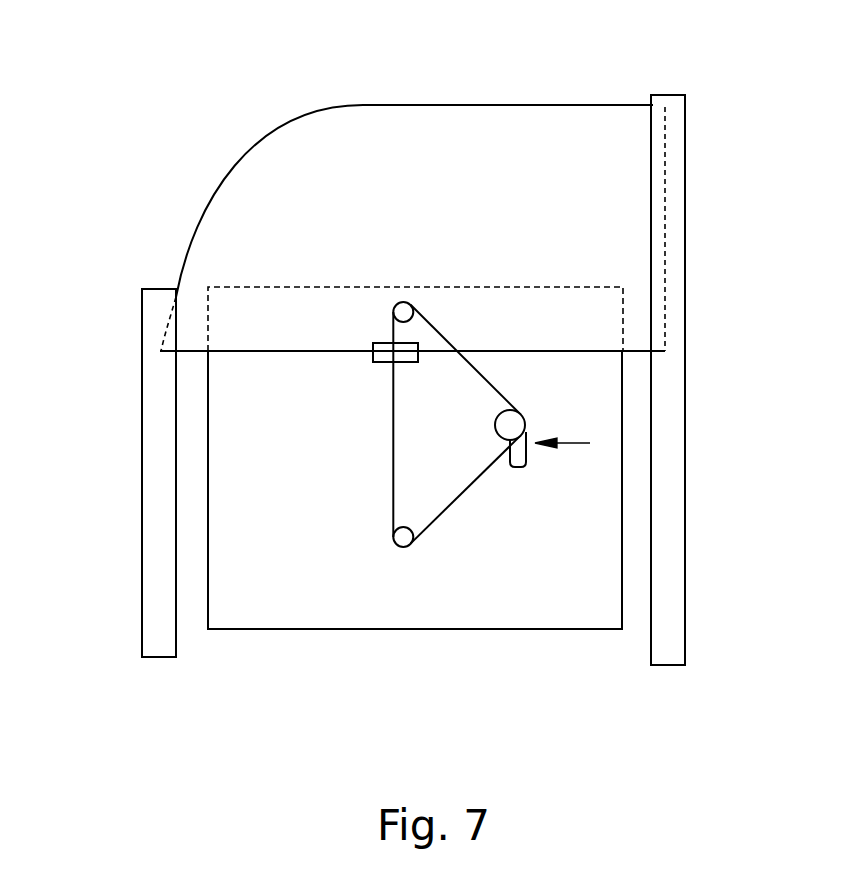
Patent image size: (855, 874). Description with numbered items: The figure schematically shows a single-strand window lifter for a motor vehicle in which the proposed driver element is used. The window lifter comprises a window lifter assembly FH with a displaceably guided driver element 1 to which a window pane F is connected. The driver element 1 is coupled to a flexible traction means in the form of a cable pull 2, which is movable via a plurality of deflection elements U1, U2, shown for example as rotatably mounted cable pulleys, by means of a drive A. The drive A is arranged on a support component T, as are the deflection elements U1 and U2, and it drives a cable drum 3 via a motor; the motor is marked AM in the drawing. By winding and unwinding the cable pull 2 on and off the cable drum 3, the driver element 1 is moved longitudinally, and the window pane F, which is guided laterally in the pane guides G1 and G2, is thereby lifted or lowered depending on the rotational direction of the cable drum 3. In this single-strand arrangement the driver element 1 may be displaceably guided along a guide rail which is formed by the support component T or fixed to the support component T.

The pane guide G1 is at (148, 513).
The pane guide G2 is at (668, 527).
The window pane F is at (477, 127).
The support component T is at (263, 608).
The window lifter assembly FH is at (533, 633).
The cable pull 2 is at (455, 502).
The deflection element U2 is at (397, 302).
The deflection element U1 is at (398, 548).
The driver element 1 is at (384, 357).
The drive motor AM is at (520, 467).
The cable drum 3 is at (512, 424).
The drive A is at (573, 448).